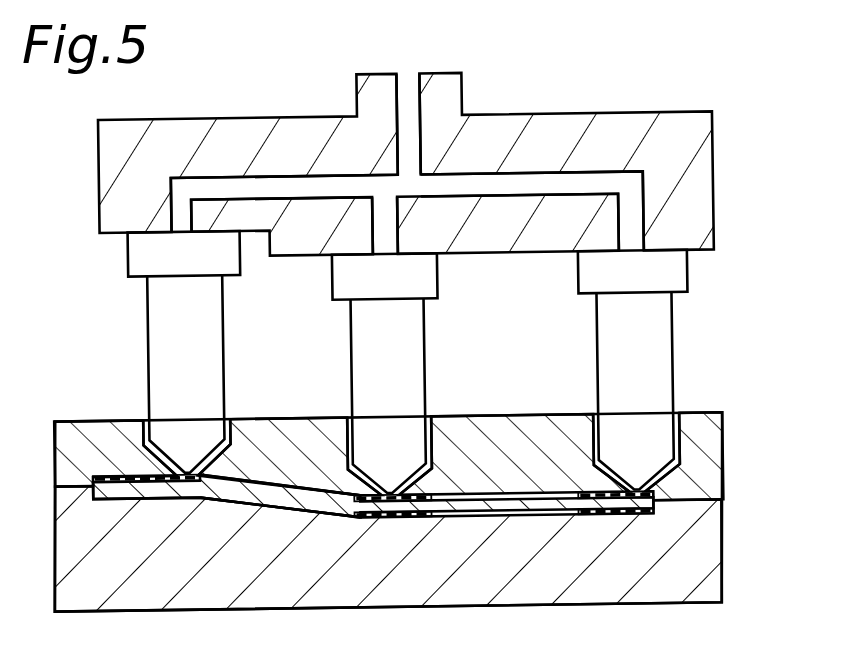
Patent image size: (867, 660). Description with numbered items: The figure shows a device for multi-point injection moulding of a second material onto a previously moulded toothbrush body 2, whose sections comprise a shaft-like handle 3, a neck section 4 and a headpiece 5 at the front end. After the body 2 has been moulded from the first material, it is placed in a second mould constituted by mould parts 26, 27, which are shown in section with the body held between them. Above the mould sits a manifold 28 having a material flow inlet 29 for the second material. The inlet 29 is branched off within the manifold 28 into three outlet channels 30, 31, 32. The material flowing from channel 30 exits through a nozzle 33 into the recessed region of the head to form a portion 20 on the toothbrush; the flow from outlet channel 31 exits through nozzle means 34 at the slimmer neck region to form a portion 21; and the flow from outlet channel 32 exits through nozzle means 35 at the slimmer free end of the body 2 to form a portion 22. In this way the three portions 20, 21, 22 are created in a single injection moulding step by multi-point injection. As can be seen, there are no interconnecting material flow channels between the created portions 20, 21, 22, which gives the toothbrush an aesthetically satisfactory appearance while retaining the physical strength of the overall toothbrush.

The toothbrush body 2 is at (516, 506).
The shaft-like handle 3 is at (450, 480).
The neck section 4 is at (255, 468).
The headpiece 5 is at (100, 459).
The portion 20 is at (126, 462).
The portion 21 is at (342, 493).
The portion 22 is at (570, 489).
The mould part 26 is at (489, 437).
The mould part 27 is at (689, 550).
The manifold 28 is at (537, 131).
The material flow inlet 29 is at (413, 124).
The outlet channel 30 is at (183, 208).
The outlet channel 31 is at (379, 227).
The outlet channel 32 is at (588, 190).
The nozzle 33 is at (146, 303).
The nozzle means 34 is at (348, 318).
The nozzle means 35 is at (655, 331).